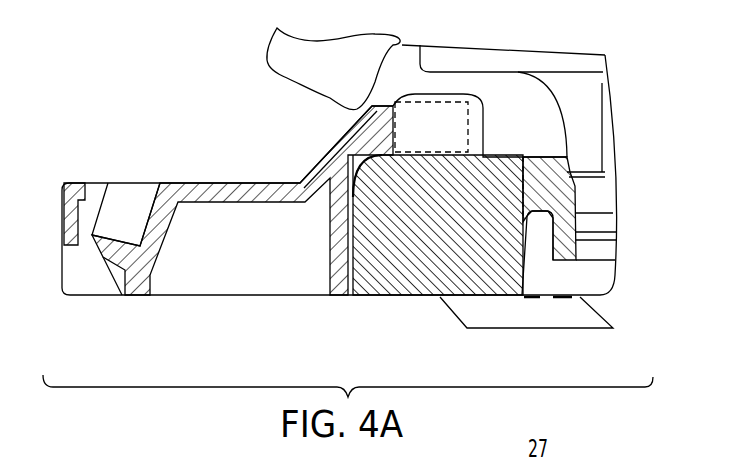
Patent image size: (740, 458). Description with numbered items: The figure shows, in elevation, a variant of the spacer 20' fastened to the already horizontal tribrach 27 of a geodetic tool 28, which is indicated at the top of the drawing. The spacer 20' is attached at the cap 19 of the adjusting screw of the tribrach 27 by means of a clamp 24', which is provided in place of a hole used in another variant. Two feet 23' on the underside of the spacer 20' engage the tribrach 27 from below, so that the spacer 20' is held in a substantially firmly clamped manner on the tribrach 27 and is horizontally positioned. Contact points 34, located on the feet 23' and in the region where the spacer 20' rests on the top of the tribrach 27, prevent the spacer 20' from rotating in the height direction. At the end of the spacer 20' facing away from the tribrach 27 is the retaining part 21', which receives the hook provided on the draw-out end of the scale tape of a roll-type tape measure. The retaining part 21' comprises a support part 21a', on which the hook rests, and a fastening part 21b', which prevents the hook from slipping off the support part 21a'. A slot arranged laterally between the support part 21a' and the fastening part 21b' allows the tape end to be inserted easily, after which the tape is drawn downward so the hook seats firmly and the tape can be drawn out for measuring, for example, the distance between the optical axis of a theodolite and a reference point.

The spacer 20' is at (227, 189).
The retaining part 21' is at (331, 333).
The support part 21a' is at (126, 214).
The fastening part 21b' is at (61, 194).
The geodetic tool 28 is at (340, 78).
The clamp 24' is at (438, 81).
The cap of the adjusting screw 19 is at (478, 130).
The tribrach 27 is at (380, 296).
The contact points 34 is at (352, 184).
The feet 23' is at (526, 335).